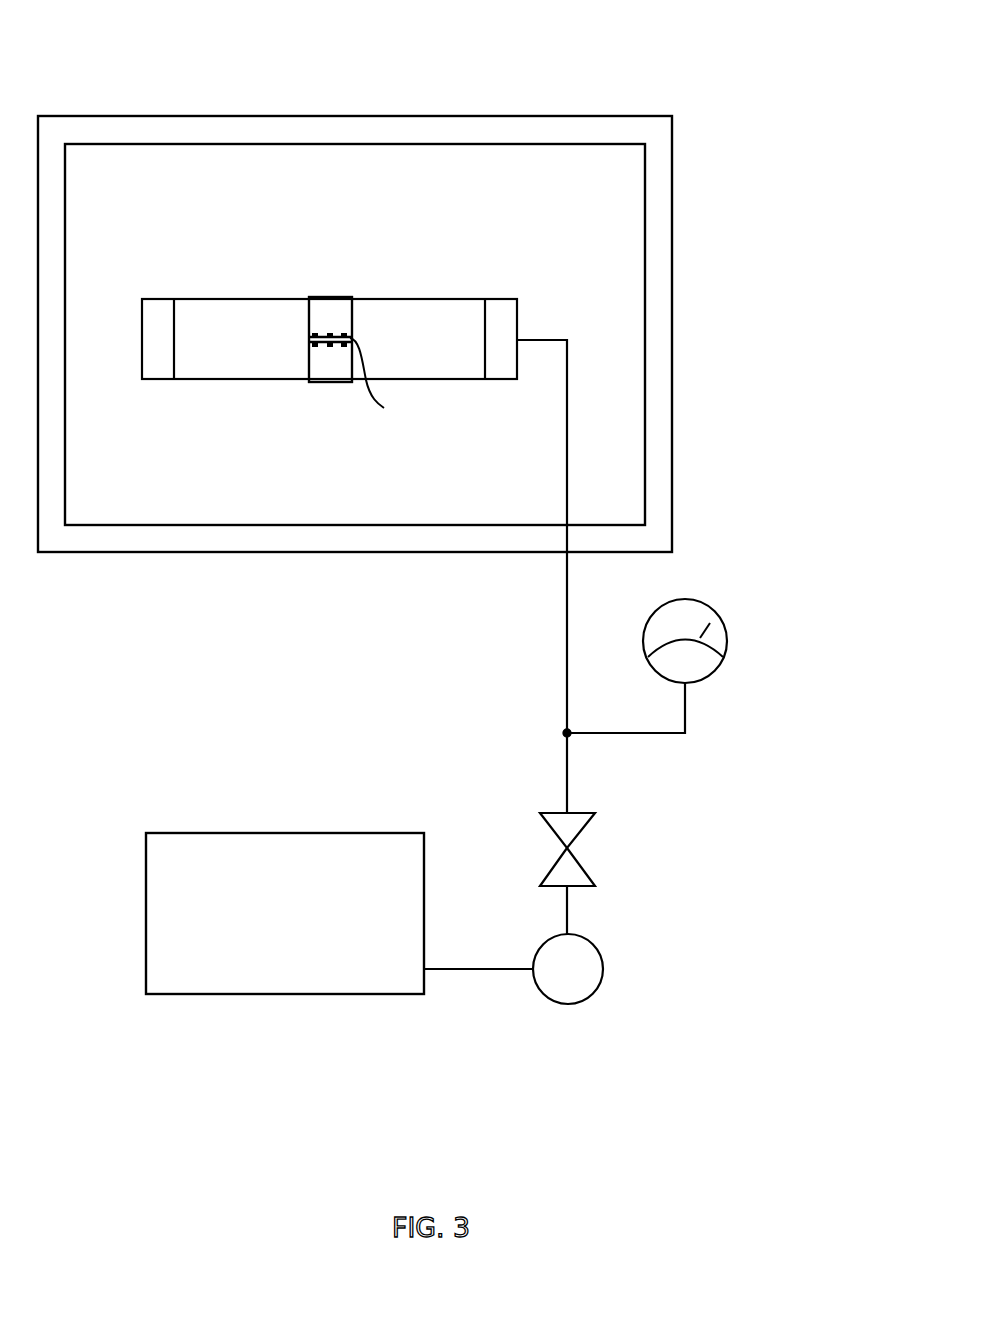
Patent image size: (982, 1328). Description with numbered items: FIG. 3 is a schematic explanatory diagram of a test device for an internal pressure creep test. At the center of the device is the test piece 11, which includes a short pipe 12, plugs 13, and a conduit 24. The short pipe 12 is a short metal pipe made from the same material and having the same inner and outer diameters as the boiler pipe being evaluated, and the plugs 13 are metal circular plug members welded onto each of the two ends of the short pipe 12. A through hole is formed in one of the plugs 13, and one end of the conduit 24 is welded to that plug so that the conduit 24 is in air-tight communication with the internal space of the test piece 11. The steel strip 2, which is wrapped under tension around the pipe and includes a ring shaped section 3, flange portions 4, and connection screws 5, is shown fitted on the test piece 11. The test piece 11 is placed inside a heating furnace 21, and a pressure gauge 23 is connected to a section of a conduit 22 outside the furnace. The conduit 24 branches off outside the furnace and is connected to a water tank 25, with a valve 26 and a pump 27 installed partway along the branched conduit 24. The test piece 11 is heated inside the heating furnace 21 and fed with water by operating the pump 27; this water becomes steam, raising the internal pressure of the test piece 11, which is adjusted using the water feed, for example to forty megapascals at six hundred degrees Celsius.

The steel strip 2 is at (322, 286).
The ring shaped section 3 is at (330, 368).
The flange portions 4 is at (375, 380).
The connection screws 5 is at (313, 334).
The test piece 11 is at (433, 292).
The short pipe 12 is at (413, 357).
The plugs 13 is at (156, 306).
The heating furnace 21 is at (447, 115).
The conduit 22 is at (628, 734).
The pressure gauge 23 is at (712, 605).
The conduit 24 is at (503, 968).
The water tank 25 is at (285, 832).
The valve 26 is at (589, 873).
The pump 27 is at (604, 969).